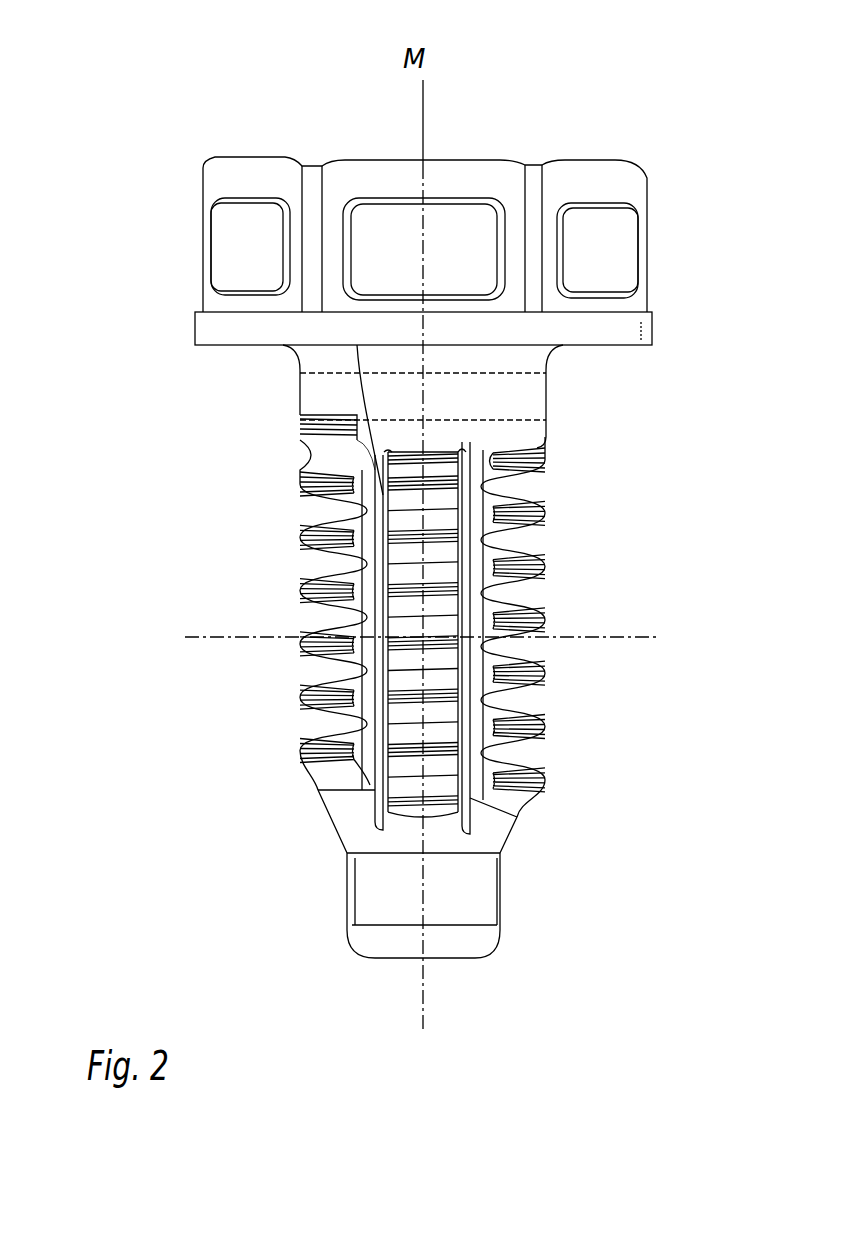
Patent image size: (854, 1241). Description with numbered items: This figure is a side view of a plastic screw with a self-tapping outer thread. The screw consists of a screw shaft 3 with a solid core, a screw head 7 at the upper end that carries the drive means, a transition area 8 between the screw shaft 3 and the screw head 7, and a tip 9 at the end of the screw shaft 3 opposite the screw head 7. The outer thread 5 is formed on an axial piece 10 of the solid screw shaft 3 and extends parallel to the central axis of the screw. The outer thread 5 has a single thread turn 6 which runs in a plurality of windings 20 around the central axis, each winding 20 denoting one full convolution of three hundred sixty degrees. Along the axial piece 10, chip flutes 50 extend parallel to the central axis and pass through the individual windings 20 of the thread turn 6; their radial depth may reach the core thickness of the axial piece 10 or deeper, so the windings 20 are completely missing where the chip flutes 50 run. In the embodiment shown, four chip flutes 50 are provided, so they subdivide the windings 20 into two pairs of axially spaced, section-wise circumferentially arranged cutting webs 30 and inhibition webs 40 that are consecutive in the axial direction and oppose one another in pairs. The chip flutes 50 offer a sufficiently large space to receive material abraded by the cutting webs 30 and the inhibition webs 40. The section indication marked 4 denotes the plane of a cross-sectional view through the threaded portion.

The screw shaft 3 is at (223, 650).
The section line IV 4 is at (438, 108).
The outer thread 5 is at (130, 405).
The thread turn 6 is at (297, 694).
The screw head 7 is at (580, 160).
The transition area 8 is at (557, 391).
The tip 9 is at (490, 897).
The axial piece 10 is at (721, 447).
The winding 20 is at (319, 591).
The cutting web 30 is at (520, 742).
The inhibition web 40 is at (545, 615).
The chip flute 50 is at (377, 797).